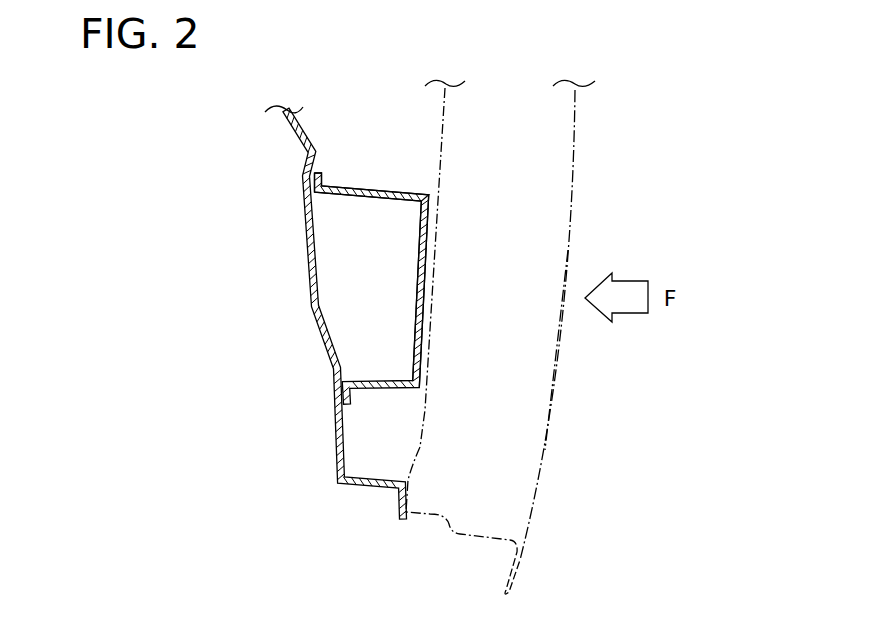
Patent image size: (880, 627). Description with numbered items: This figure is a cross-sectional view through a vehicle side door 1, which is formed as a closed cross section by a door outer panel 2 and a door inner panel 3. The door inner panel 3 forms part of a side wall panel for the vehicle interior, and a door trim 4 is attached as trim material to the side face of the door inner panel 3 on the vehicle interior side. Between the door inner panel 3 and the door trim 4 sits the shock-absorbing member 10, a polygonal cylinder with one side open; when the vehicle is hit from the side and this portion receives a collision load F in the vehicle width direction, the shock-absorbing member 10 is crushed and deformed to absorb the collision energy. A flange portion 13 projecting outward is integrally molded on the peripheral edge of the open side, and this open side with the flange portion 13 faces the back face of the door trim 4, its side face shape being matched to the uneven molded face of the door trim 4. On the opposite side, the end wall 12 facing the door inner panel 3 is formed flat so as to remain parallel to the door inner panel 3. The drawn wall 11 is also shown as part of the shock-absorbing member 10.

The side door 1 is at (573, 155).
The door outer panel 2 is at (570, 247).
The door inner panel 3 is at (442, 117).
The door trim 4 is at (337, 452).
The shock-absorbing member 10 is at (429, 259).
The upper flange 11 is at (370, 187).
The end wall 12 is at (421, 306).
The flange portion 13 is at (322, 184).